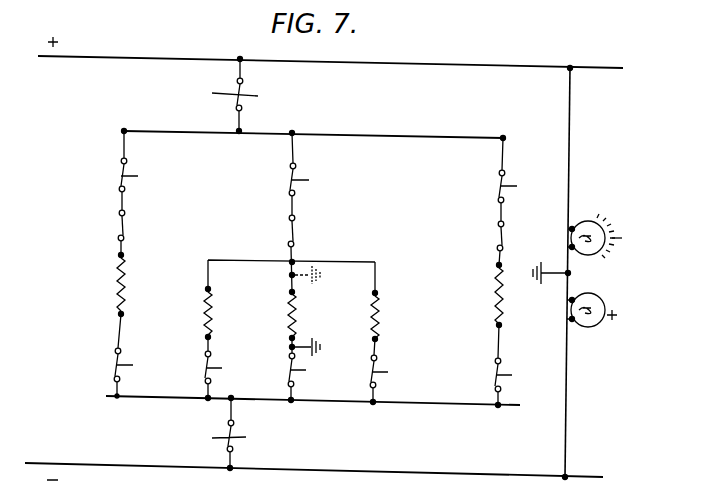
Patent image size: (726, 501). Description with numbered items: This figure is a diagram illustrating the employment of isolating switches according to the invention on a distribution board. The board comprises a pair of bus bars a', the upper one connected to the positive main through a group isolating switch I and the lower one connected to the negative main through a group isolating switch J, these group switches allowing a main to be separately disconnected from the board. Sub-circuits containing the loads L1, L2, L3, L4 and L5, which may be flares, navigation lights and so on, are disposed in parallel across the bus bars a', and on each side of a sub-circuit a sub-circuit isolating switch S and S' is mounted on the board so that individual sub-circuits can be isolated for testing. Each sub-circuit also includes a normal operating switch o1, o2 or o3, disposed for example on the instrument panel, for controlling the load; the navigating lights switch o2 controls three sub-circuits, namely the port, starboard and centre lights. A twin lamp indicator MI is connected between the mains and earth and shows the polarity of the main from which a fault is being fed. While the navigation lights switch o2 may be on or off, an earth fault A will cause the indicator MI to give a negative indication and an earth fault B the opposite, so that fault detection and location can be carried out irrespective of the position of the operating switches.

The group isolating switch I is at (228, 95).
The sub-circuit isolating switch S is at (306, 180).
The sub-circuit isolating switch S' is at (301, 370).
The normal operating switch o1 is at (131, 225).
The normal operating switch o2 is at (305, 231).
The normal operating switch o3 is at (514, 236).
The load L1 is at (130, 285).
The load L2 is at (220, 313).
The load L3 is at (306, 315).
The load L4 is at (389, 316).
The load L5 is at (482, 295).
The bus bar a' is at (313, 270).
The group isolating switch J is at (222, 433).
The earth fault A is at (314, 348).
The earth fault B is at (314, 276).
The twin lamp indicator MI is at (577, 270).